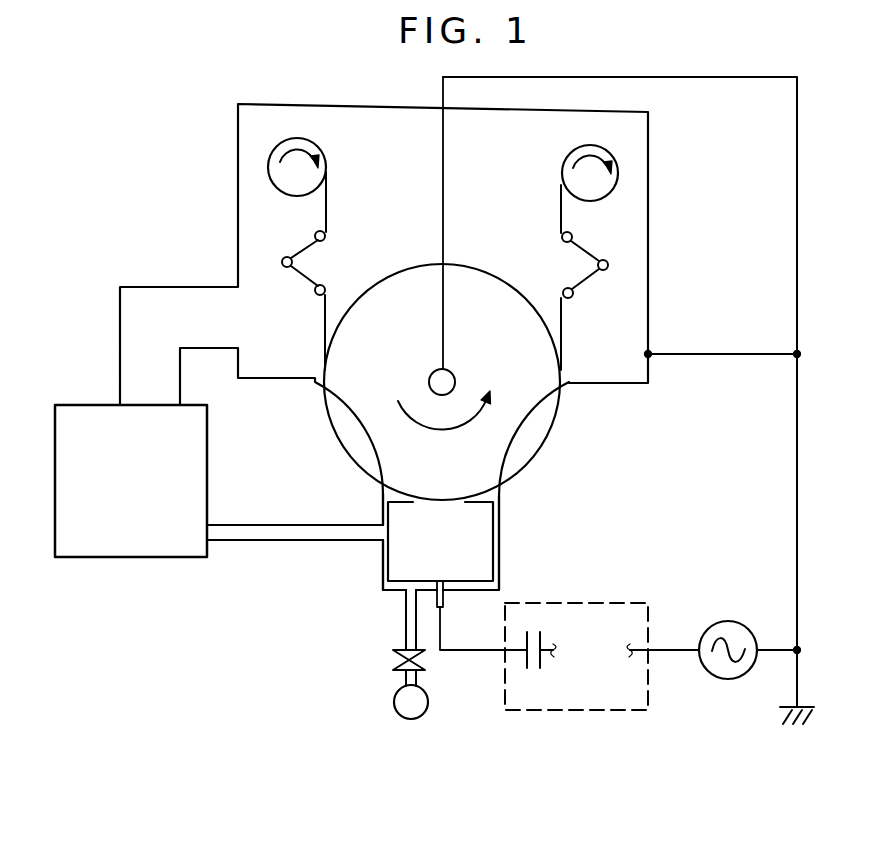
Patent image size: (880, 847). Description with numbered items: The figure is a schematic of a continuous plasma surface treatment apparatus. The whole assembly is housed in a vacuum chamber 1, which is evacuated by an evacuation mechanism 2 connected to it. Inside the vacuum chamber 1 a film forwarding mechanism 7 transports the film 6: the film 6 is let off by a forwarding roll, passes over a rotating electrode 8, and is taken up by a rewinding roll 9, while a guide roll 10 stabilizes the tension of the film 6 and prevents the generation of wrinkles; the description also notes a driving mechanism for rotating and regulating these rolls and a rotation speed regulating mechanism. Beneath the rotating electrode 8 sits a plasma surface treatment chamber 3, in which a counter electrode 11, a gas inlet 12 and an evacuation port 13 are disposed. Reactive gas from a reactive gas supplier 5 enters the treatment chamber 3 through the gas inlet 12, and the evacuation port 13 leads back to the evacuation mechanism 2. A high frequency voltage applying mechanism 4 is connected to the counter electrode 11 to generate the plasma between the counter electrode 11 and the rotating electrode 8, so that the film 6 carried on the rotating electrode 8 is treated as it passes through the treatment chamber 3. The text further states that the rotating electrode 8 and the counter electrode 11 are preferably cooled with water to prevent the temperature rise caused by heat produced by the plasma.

The vacuum chamber 1 is at (382, 107).
The evacuation mechanism 2 is at (207, 455).
The plasma surface treatment chamber 3 is at (502, 513).
The high frequency voltage applying mechanism 4 is at (607, 603).
The reactive gas supplier 5 is at (397, 693).
The film 6 is at (328, 197).
The film forwarding mechanism 7 is at (317, 150).
The rotating electrode 8 is at (492, 272).
The rewinding roll 9 is at (618, 171).
The guide roll 10 is at (612, 263).
The counter electrode 11 is at (493, 548).
The gas inlet 12 is at (406, 610).
The evacuation port 13 is at (372, 531).